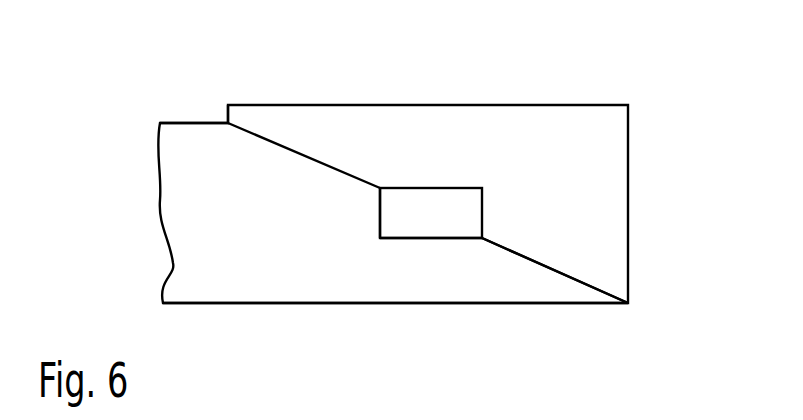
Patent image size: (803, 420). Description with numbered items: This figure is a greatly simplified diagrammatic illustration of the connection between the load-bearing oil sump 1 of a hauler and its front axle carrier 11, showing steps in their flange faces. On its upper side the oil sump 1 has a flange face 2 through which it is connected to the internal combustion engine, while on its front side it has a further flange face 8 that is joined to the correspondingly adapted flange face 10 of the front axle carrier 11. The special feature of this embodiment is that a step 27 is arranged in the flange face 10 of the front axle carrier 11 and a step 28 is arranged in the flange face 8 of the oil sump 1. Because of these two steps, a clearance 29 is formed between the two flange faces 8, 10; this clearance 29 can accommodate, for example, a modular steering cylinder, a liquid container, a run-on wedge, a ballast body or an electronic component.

The oil sump 1 is at (547, 135).
The flange face 2 is at (271, 100).
The flange face 8 is at (540, 262).
The flange face 10 is at (580, 277).
The front axle carrier 11 is at (218, 275).
The step 27 is at (488, 212).
The step 28 is at (380, 223).
The clearance 29 is at (415, 217).